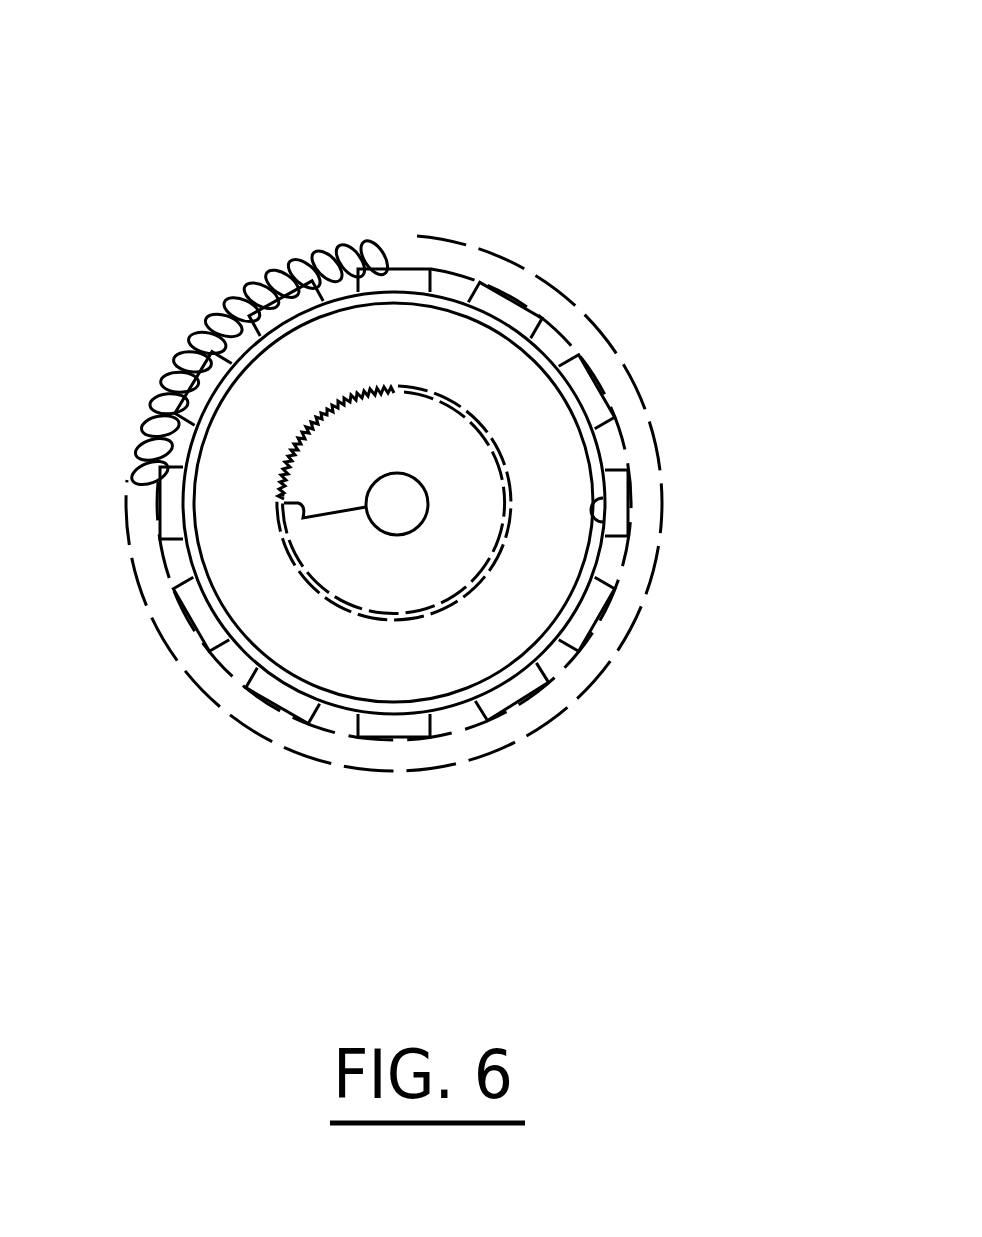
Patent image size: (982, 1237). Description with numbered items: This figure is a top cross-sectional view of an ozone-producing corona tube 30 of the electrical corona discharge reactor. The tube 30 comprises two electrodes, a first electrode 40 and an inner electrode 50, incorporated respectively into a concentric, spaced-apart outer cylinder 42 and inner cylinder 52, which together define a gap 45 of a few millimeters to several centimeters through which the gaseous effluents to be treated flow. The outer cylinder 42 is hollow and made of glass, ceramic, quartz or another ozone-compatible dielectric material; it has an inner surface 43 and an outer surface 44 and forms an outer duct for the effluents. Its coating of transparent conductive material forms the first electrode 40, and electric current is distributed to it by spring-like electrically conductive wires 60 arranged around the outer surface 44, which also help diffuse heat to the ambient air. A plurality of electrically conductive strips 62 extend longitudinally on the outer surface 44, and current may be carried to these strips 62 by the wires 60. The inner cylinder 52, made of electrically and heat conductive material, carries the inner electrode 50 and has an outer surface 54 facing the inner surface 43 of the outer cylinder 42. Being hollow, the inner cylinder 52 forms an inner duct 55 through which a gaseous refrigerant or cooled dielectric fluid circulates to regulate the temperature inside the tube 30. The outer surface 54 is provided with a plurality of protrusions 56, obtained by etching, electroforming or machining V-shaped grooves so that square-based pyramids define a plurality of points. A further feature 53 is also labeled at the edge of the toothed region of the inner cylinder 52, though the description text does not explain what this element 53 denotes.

The corona tube 30 is at (442, 162).
The first electrode 40 is at (658, 389).
The outer cylinder 42 is at (547, 636).
The inner surface 43 is at (603, 498).
The outer surface 44 is at (613, 560).
The gap 45 is at (526, 401).
The inner electrode 50 is at (360, 660).
The inner cylinder 52 is at (462, 600).
The pawl 53 is at (283, 503).
The outer surface 54 is at (318, 588).
The inner duct 55 is at (397, 504).
The protrusions 56 is at (336, 418).
The spring-like electrically conductive wires 60 is at (198, 325).
The electrically conductive strips 62 is at (413, 280).